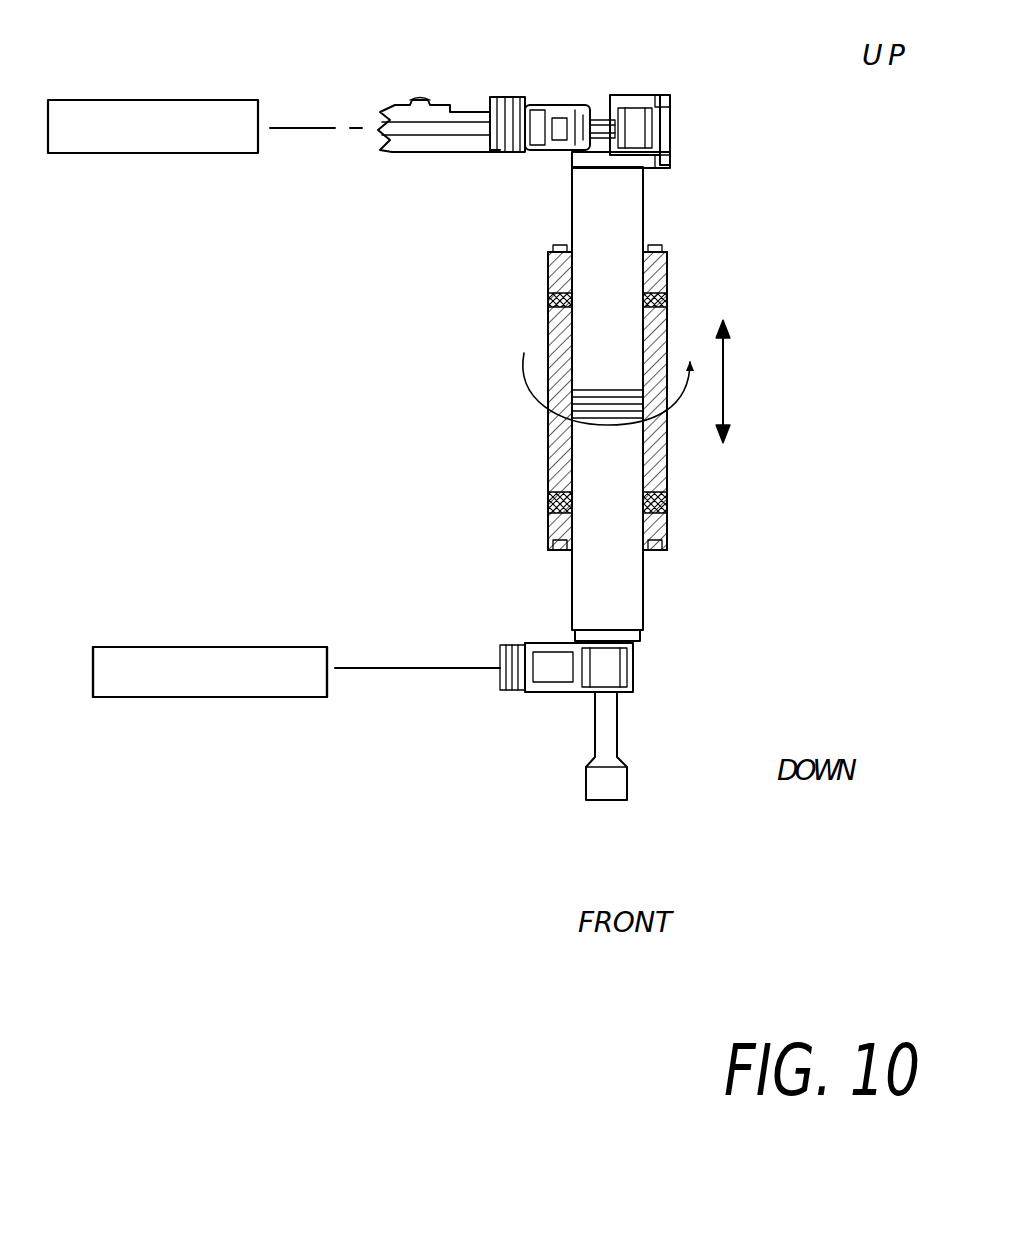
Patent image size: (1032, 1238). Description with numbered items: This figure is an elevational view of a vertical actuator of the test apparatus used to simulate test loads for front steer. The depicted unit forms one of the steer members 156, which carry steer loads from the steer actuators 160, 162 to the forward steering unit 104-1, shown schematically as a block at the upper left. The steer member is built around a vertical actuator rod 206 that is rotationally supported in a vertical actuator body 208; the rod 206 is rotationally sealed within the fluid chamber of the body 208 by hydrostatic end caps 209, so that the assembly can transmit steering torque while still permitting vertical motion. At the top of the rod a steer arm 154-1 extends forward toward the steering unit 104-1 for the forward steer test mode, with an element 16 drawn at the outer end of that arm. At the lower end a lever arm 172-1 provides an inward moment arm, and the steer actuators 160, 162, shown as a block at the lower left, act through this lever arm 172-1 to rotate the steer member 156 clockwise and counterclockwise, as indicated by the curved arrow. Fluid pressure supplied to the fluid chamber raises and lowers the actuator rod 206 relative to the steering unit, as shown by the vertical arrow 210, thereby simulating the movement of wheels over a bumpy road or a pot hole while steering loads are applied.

The forward steering unit 104-1 is at (150, 100).
The steer actuator 160 is at (175, 647).
The steer actuator 162 is at (210, 672).
The steer member 156 is at (620, 218).
The vertical actuator body 208 is at (665, 262).
The vertical actuator rod 206 is at (610, 527).
The hydrostatic end caps 209 is at (548, 268).
The arrow 210 is at (728, 385).
The gripper 16 is at (527, 95).
The steer arm 154-1 is at (680, 100).
The lever arm 172-1 is at (605, 668).